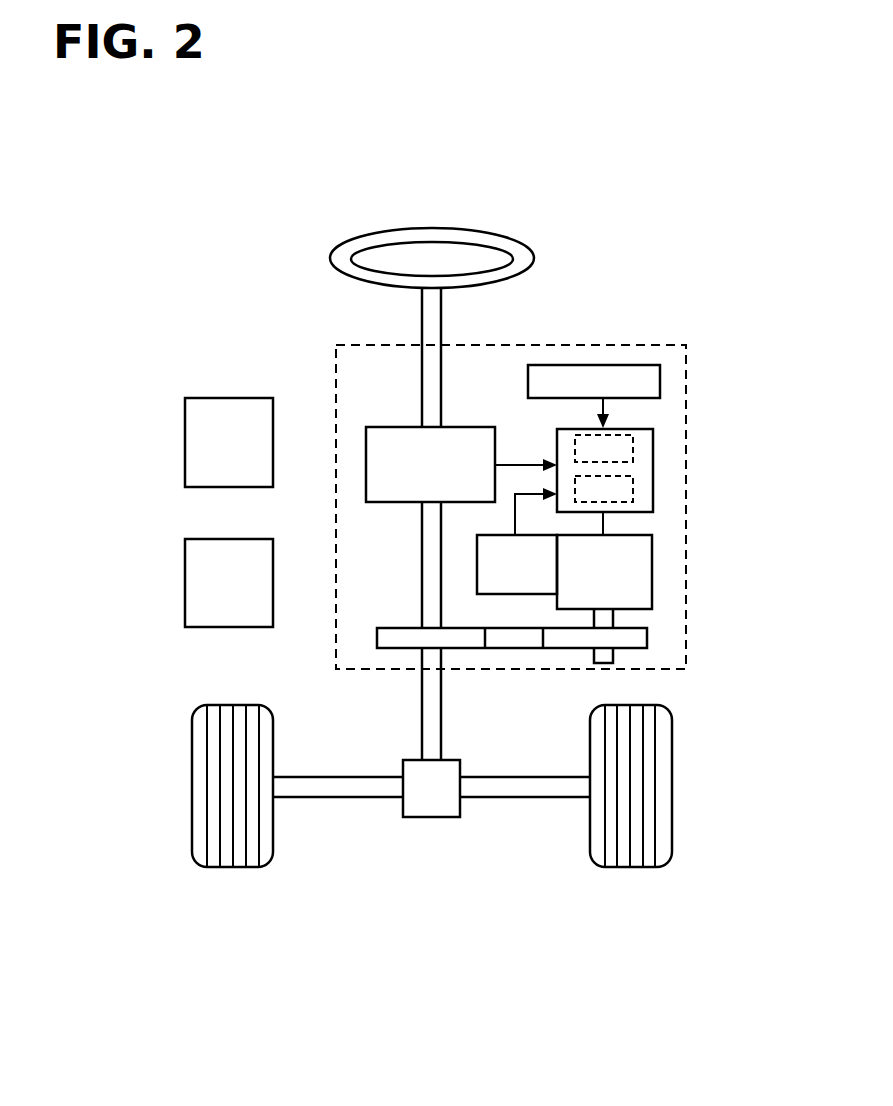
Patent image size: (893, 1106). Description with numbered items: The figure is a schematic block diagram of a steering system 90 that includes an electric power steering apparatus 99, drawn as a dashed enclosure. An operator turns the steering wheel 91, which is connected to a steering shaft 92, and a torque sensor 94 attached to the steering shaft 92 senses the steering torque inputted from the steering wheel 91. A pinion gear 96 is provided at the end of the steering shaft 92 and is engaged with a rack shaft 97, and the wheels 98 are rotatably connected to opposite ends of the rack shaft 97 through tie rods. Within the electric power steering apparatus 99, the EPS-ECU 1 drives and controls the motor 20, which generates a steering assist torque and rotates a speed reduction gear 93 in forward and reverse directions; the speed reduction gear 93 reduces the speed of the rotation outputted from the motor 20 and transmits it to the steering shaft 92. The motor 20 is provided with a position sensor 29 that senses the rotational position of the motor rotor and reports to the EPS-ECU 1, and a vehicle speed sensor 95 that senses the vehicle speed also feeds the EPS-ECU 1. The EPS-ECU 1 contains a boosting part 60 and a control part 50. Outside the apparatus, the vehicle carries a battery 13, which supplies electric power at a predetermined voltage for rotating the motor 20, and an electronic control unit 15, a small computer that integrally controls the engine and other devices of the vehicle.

The EPS-ECU 1 is at (652, 477).
The battery 13 is at (185, 578).
The electronic control unit 15 is at (185, 425).
The motor 20 is at (652, 565).
The position sensor 29 is at (477, 557).
The control part 50 is at (633, 488).
The boosting part 60 is at (633, 455).
The steering system 90 is at (388, 912).
The steering wheel 91 is at (331, 262).
The steering shaft 92 is at (422, 319).
The speed reduction gear 93 is at (647, 638).
The torque sensor 94 is at (366, 473).
The vehicle speed sensor 95 is at (660, 380).
The pinion gear 96 is at (424, 817).
The rack shaft 97 is at (334, 797).
The wheels 98 is at (247, 867).
The electric power steering apparatus 99 is at (606, 345).